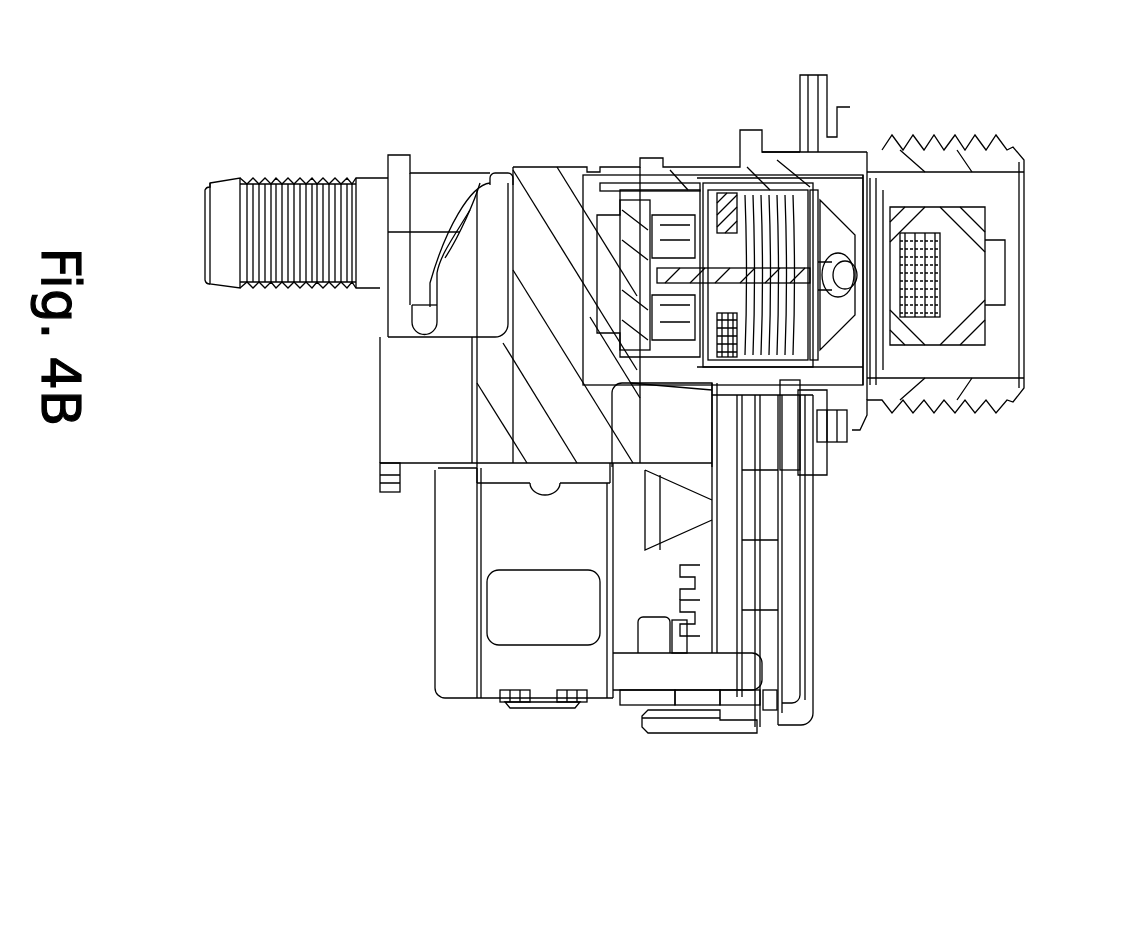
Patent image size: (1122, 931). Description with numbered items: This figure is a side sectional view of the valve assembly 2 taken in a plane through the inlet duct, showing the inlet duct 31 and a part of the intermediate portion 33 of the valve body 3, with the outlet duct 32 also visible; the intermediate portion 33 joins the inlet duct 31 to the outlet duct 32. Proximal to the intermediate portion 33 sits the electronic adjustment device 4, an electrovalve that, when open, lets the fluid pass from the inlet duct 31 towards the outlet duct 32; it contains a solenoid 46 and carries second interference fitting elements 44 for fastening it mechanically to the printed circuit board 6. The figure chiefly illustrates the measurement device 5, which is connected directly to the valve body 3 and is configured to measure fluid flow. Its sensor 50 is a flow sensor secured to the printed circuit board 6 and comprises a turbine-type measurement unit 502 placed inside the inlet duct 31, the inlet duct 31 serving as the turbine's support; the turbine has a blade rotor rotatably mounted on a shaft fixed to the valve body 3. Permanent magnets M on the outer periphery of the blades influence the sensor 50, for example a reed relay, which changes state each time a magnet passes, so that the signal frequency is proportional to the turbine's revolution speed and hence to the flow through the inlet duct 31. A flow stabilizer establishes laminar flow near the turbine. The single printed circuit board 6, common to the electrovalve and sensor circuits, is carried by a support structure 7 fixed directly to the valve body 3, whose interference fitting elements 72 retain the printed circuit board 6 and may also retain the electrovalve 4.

The valve assembly 2 is at (990, 786).
The valve body 3 is at (590, 252).
The inlet duct 31 is at (726, 203).
The outlet duct 32 is at (233, 190).
The intermediate portion 33 is at (537, 173).
The electronic adjustment device 4 is at (528, 631).
The second interference fitting elements 44 is at (633, 673).
The solenoid 46 is at (447, 610).
The measurement device 5 is at (883, 359).
The sensor 50 is at (742, 424).
The turbine-type measurement unit 502 is at (727, 213).
The printed circuit board 6 is at (735, 585).
The support structure 7 is at (768, 600).
The interference fitting elements 72 is at (712, 610).
The permanent magnets M is at (702, 177).